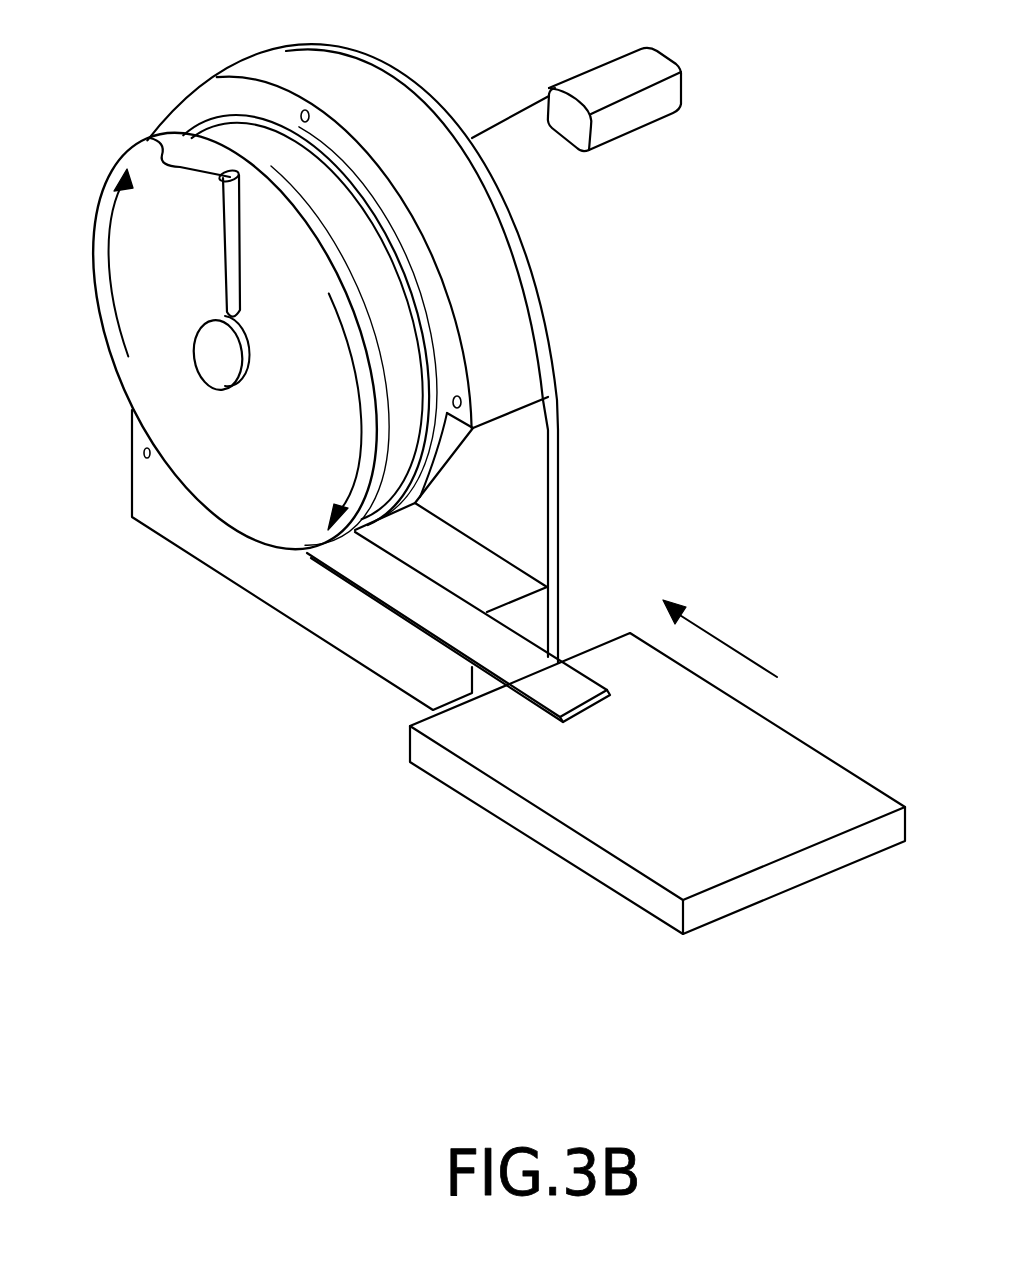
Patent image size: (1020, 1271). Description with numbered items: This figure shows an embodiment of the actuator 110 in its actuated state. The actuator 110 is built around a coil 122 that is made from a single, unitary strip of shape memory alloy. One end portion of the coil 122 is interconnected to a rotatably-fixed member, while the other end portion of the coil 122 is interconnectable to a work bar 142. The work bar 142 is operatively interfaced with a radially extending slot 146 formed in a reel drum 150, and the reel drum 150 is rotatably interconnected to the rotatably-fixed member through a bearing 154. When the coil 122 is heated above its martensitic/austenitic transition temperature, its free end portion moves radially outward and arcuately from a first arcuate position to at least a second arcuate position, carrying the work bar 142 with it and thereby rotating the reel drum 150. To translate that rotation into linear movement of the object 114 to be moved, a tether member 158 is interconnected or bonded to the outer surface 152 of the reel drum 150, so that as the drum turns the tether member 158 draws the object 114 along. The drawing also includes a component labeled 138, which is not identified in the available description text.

The actuator 110 is at (645, 310).
The object 114 is at (633, 783).
The coil 122 is at (485, 448).
The motor 138 is at (640, 137).
The work bar 142 is at (157, 140).
The radially extending slot 146 is at (228, 268).
The reel drum 150 is at (318, 427).
The outer surface 152 is at (413, 321).
The bearing 154 is at (218, 365).
The tether member 158 is at (437, 617).